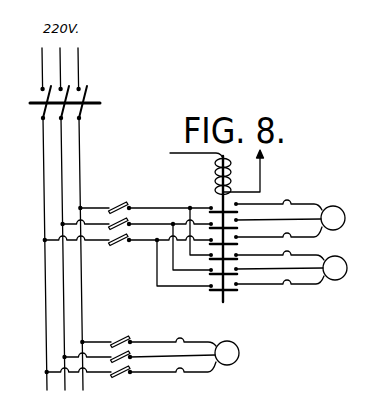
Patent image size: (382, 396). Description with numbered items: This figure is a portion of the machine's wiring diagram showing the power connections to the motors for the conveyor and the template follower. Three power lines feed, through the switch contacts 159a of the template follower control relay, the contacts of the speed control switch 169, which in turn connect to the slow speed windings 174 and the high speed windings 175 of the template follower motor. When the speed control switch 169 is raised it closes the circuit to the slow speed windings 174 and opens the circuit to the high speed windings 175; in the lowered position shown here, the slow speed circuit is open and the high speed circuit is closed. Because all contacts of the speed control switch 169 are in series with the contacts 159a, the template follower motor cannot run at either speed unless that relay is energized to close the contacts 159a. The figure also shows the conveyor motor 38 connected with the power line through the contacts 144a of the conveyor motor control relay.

The switch contacts of the template follower control relay 159a is at (139, 198).
The contacts of the conveyor motor control relay 144a is at (134, 331).
The speed control switch 169 is at (266, 174).
The slow speed windings 174 is at (333, 206).
The high speed windings 175 is at (335, 280).
The conveyor motor 38 is at (232, 343).